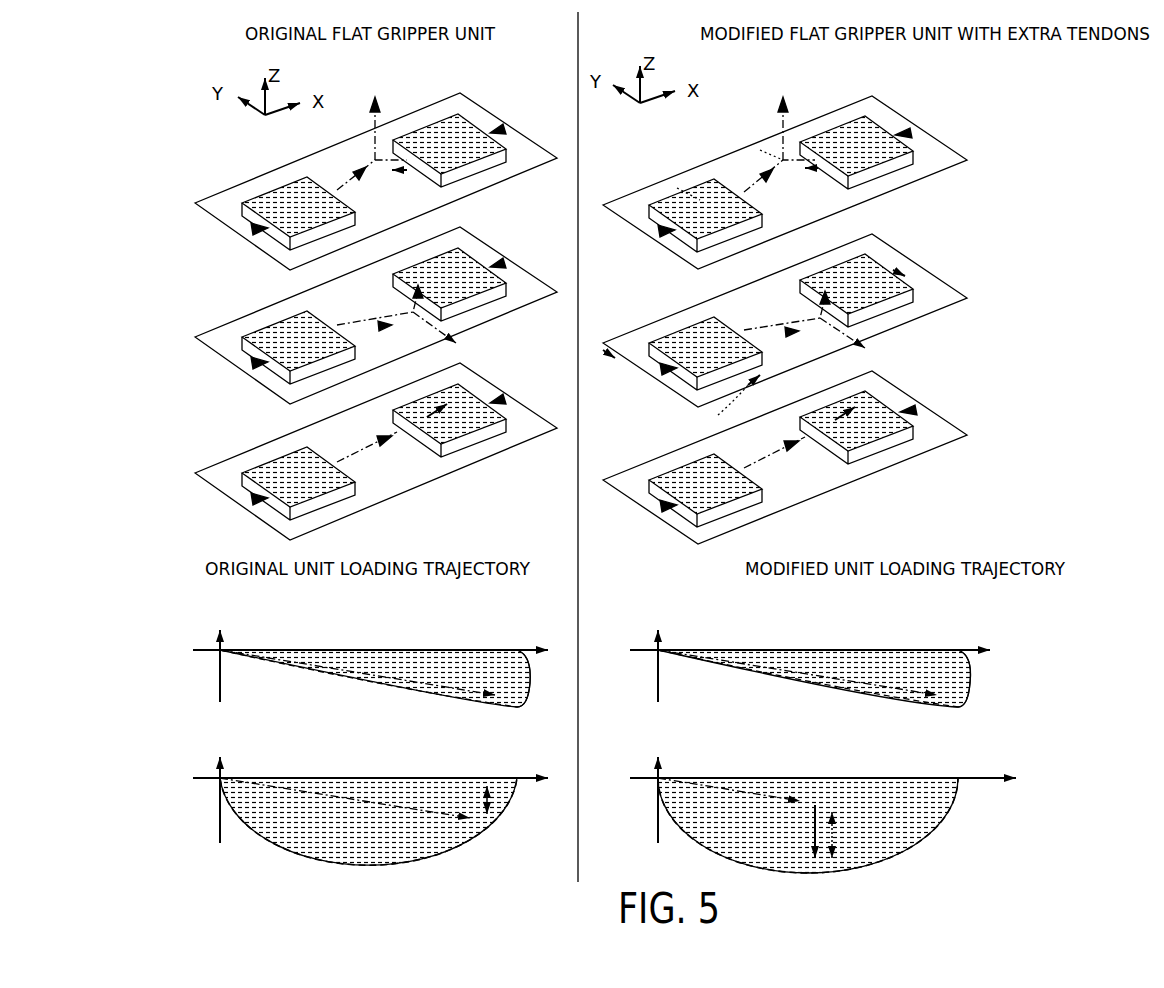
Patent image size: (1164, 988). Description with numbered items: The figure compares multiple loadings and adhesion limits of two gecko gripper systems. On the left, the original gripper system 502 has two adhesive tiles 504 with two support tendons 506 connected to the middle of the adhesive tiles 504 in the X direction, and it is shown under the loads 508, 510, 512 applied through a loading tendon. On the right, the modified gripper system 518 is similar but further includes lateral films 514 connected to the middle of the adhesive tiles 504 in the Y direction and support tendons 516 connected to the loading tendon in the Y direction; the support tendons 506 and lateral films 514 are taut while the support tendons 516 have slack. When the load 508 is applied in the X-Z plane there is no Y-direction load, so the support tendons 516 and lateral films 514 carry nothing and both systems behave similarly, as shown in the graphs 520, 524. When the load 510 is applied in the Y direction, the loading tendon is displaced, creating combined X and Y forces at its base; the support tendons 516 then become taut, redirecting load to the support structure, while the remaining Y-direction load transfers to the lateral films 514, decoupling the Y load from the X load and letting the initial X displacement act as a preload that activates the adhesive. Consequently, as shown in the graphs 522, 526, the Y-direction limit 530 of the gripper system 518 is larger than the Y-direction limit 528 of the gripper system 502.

The gripper system 502 is at (152, 133).
The adhesive tiles 504 is at (260, 205).
The support tendons 506 is at (245, 240).
The load 508 is at (372, 131).
The load 510 is at (421, 321).
The load 512 is at (447, 412).
The lateral films 514 is at (677, 188).
The support tendons 516 is at (760, 150).
The gripper system 518 is at (1078, 153).
The graph 520 is at (180, 674).
The graph 522 is at (167, 832).
The graph 524 is at (1033, 688).
The graph 526 is at (1038, 840).
The Y-direction limit 528 is at (490, 800).
The Y-direction limit 530 is at (835, 832).